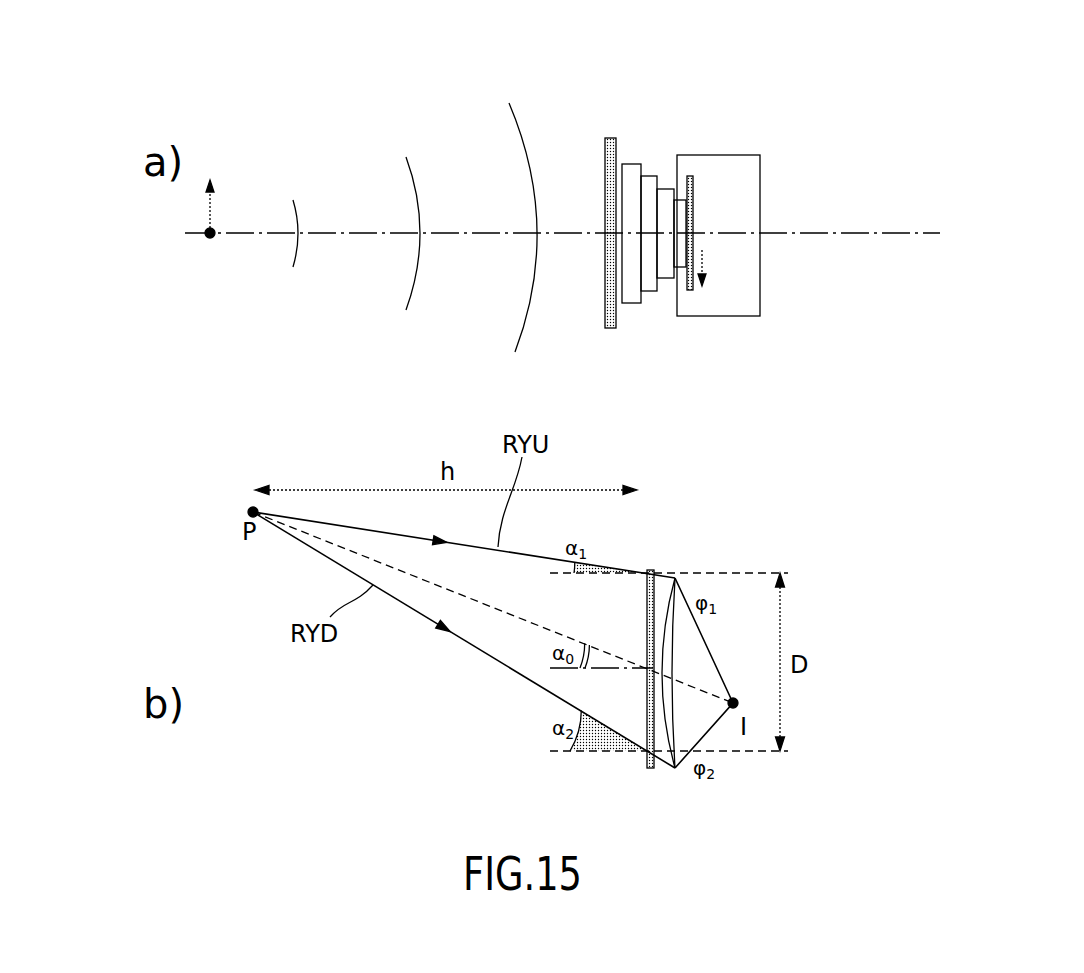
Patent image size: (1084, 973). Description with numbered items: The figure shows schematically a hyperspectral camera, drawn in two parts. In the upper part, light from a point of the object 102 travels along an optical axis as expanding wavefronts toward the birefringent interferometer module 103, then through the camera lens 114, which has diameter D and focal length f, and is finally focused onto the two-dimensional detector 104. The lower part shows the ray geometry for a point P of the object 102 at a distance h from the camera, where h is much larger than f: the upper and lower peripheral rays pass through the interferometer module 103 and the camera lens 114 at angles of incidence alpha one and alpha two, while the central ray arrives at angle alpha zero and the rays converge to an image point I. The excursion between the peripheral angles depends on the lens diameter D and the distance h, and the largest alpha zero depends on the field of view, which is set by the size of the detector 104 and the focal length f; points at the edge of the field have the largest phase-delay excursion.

The object 102 is at (246, 513).
The birefringent interferometer module 103 is at (612, 138).
The two-dimensional detector 104 is at (760, 183).
The camera lens 114 is at (632, 163).